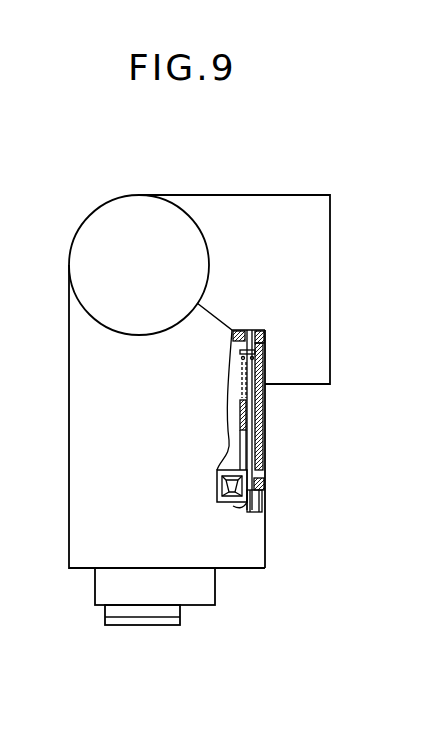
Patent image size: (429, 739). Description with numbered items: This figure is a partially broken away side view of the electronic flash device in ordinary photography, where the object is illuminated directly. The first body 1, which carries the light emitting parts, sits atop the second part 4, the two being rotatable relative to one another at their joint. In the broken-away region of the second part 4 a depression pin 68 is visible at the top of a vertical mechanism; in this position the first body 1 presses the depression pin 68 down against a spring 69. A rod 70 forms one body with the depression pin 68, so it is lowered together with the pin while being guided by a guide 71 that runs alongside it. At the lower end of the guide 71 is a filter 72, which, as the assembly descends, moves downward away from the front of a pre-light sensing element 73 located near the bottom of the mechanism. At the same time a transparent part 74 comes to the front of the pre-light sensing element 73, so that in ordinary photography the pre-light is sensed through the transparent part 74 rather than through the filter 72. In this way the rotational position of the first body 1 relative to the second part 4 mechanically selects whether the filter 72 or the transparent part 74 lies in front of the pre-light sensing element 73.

The first body 1 is at (281, 201).
The second part 4 is at (79, 453).
The depression pin 68 is at (262, 343).
The spring 69 is at (262, 398).
The rod 70 is at (254, 447).
The guide 71 is at (262, 415).
The filter 72 is at (262, 497).
The pre-light sensing element 73 is at (237, 510).
The transparent part 74 is at (263, 483).